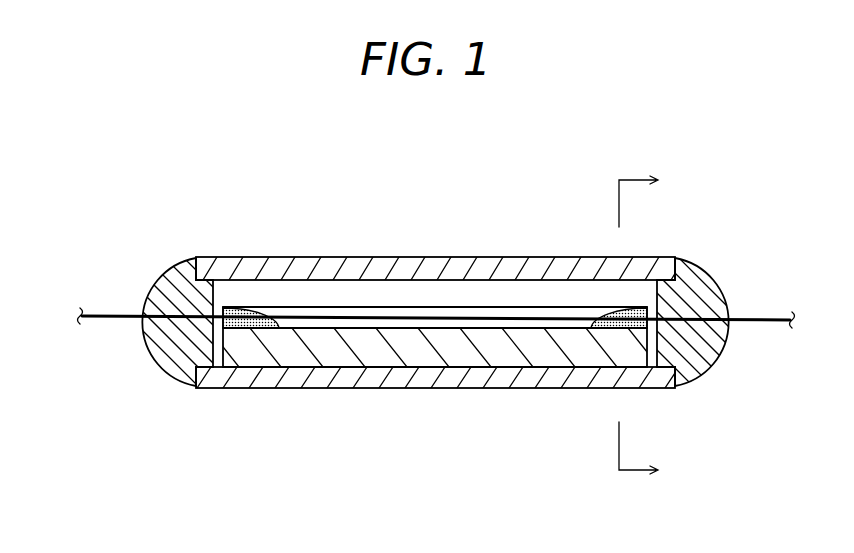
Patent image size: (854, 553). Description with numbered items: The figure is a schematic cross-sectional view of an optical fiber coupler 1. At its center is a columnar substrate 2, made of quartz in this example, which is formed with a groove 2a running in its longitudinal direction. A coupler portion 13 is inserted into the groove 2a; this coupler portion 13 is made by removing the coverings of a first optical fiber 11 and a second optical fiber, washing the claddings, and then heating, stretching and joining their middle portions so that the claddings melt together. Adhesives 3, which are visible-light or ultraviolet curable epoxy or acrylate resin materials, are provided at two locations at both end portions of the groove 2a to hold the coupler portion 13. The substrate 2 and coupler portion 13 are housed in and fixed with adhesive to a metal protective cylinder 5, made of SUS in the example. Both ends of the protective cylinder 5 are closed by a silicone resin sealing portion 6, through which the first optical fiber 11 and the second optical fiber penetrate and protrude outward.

The optical fiber coupler 1 is at (722, 158).
The substrate 2 is at (505, 353).
The groove 2a is at (567, 329).
The adhesive 3 is at (250, 305).
The protective cylinder 5 is at (252, 388).
The sealing portion 6 is at (167, 282).
The first optical fiber 11 is at (759, 322).
The coupler portion 13 is at (388, 310).